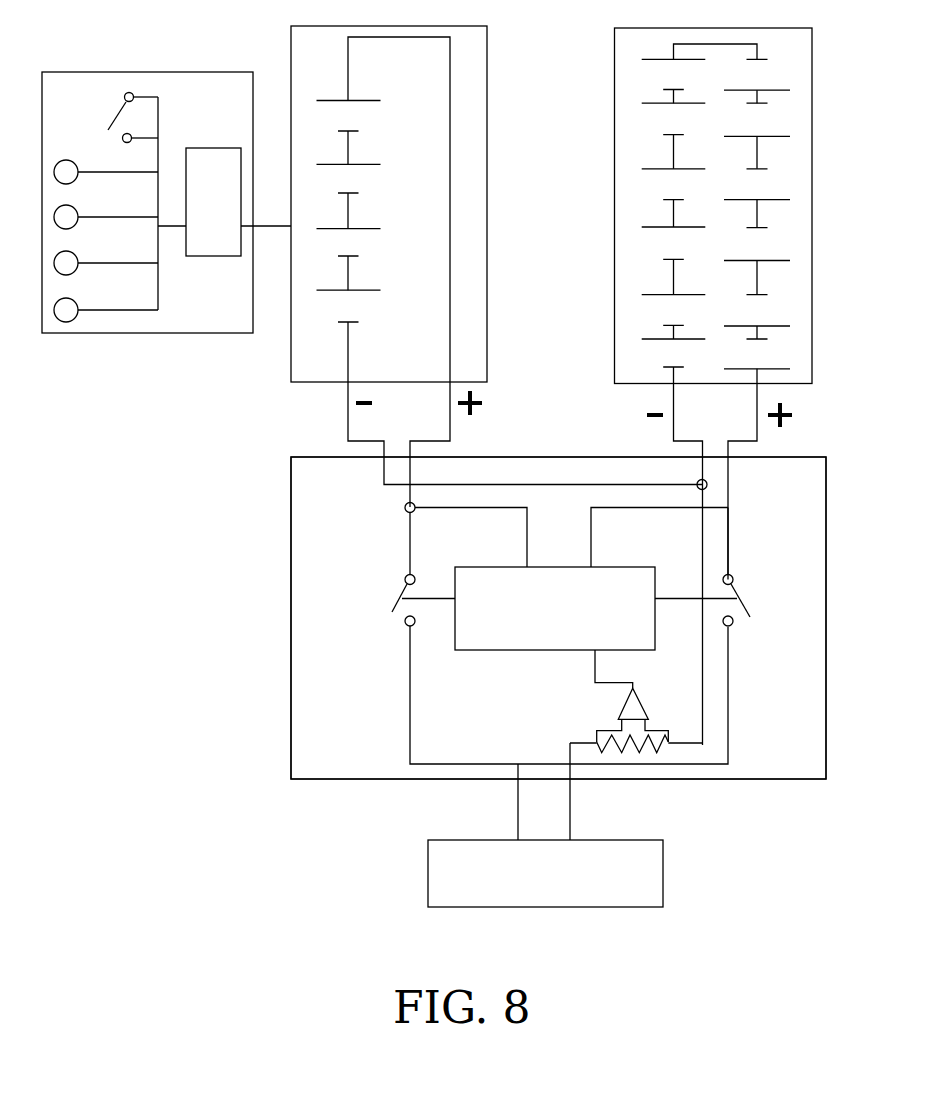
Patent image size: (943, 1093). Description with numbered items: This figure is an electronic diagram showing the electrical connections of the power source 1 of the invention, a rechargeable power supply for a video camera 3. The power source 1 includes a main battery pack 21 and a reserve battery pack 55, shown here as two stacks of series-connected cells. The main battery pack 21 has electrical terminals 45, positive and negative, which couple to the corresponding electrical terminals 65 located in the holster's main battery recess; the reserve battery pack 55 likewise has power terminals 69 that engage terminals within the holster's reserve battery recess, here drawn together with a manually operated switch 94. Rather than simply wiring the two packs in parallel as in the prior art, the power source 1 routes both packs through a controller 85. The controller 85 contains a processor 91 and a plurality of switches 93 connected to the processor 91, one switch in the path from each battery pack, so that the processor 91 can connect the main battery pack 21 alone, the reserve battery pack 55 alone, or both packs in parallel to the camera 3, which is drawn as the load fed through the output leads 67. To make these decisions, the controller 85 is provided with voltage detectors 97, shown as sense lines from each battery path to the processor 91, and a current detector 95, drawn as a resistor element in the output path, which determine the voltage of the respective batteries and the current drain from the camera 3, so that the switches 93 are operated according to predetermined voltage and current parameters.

The power source 1 is at (257, 522).
The video camera 3 is at (650, 890).
The main battery pack 21 is at (487, 48).
The electrical terminals 45 is at (347, 383).
The reserve battery pack 55 is at (812, 45).
The electrical terminals 65 is at (668, 392).
The output leads to load 67 is at (515, 790).
The power terminals 69 is at (113, 325).
The controller 85 is at (826, 658).
The processor 91 is at (510, 642).
The switches 93 is at (404, 617).
The switch SW1 94 is at (138, 115).
The current detectors 95 is at (652, 753).
The voltage detectors 97 is at (450, 508).